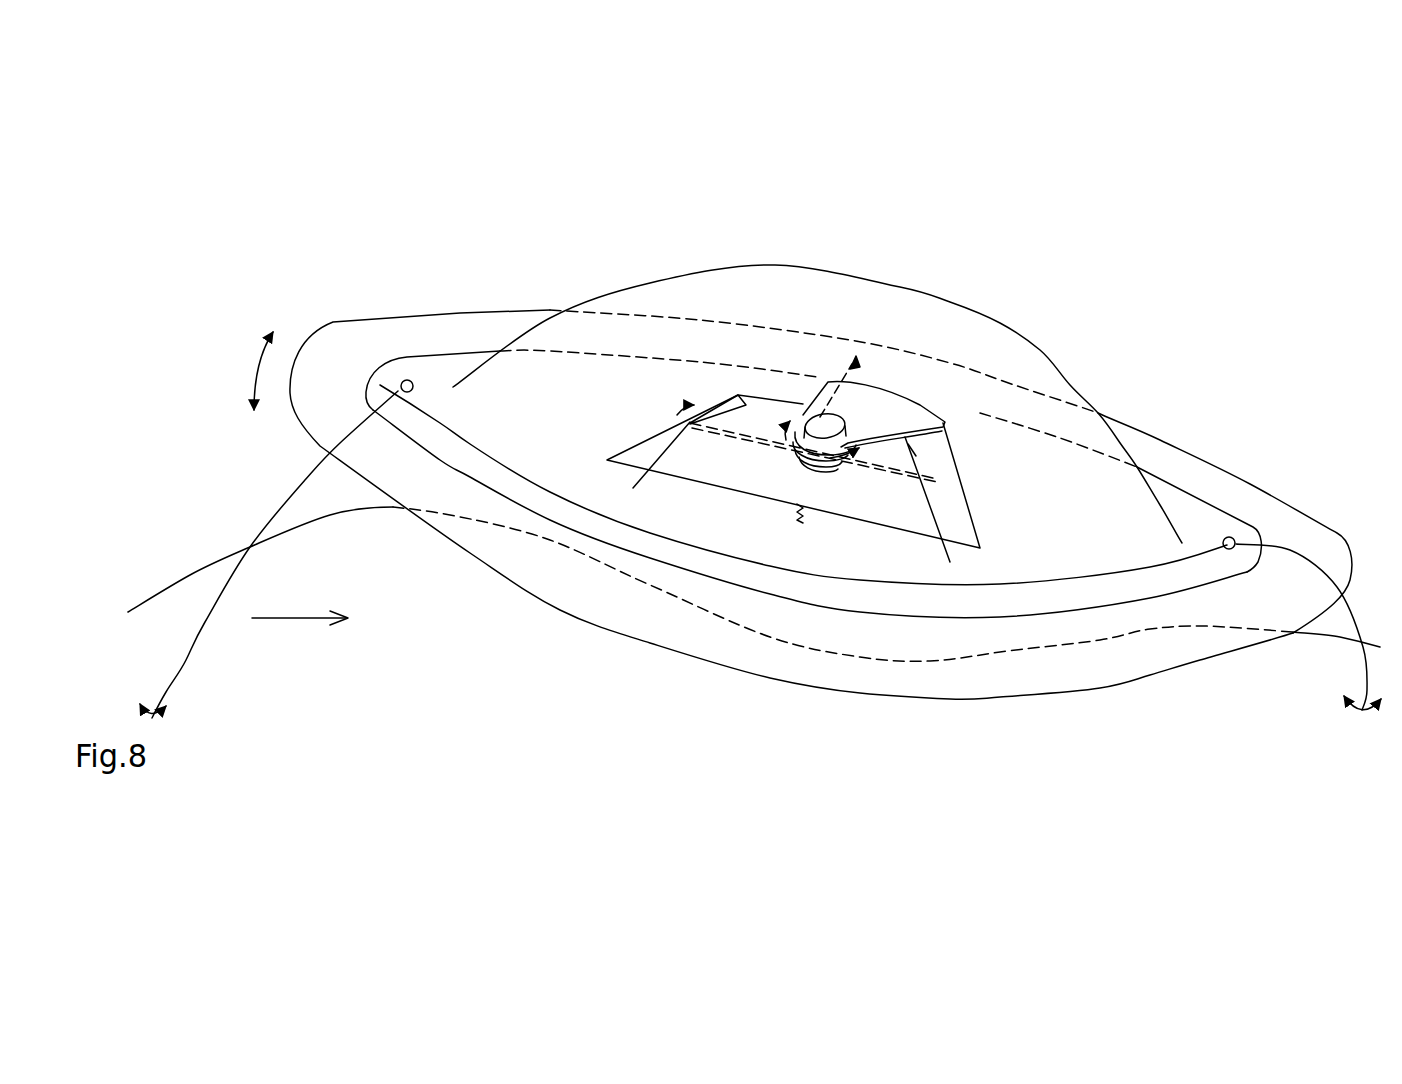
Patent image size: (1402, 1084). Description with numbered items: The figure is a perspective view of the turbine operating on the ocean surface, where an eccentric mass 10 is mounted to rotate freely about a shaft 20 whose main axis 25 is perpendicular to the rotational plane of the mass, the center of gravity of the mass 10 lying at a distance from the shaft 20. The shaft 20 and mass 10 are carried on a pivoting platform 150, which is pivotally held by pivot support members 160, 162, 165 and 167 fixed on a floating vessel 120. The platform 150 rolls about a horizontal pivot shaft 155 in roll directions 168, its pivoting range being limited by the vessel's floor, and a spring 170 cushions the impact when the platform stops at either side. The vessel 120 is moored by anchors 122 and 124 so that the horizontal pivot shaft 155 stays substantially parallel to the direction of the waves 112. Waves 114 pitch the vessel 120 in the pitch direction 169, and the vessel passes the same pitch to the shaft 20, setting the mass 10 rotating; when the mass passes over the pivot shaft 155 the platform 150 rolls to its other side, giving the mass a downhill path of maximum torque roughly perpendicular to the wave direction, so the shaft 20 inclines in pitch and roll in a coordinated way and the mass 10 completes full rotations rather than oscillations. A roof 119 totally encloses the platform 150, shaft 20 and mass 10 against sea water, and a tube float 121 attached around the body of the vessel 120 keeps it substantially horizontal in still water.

The eccentric mass 10 is at (903, 413).
The shaft 20 is at (803, 405).
The main axis 25 is at (858, 366).
The waves 112 is at (307, 620).
The waves 114 is at (273, 537).
The roof 119 is at (1027, 350).
The vessel 120 is at (1225, 575).
The tube float 121 is at (1187, 463).
The anchor 122 is at (170, 687).
The anchor 124 is at (1357, 693).
The pivoting platform 150 is at (950, 530).
The horizontal pivot shaft 155 is at (907, 472).
The pivot support member 160 is at (947, 505).
The pivot support member 162 is at (910, 446).
The pivot support member 165 is at (661, 458).
The pivot support member 167 is at (733, 399).
The roll directions 168 is at (675, 414).
The pitch direction 169 is at (284, 334).
The spring 170 is at (790, 516).